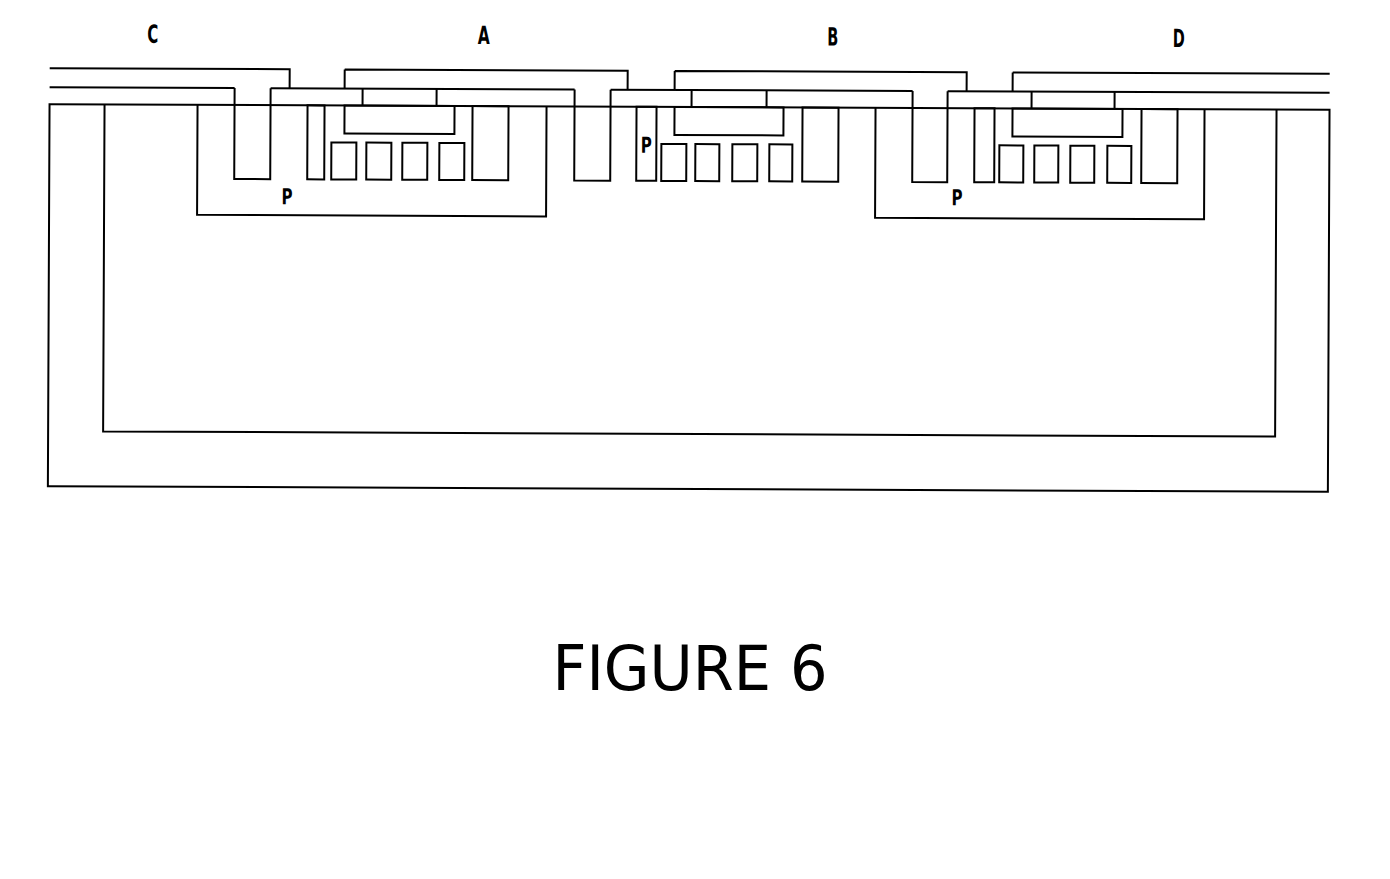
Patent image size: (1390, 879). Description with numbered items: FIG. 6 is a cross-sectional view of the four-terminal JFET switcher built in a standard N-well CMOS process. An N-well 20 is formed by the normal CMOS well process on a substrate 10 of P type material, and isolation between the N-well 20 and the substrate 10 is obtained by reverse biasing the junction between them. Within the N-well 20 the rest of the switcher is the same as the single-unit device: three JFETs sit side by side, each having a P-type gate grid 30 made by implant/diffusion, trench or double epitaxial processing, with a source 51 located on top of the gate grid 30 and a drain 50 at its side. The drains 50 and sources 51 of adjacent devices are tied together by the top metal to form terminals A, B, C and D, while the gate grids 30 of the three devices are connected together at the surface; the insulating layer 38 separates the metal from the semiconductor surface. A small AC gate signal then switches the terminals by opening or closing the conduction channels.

The substrate 10 is at (689, 298).
The N-well 20 is at (689, 270).
The gate grid 30 is at (824, 144).
The insulating layer 38 is at (1333, 94).
The drain 50 is at (271, 68).
The source 51 is at (362, 68).